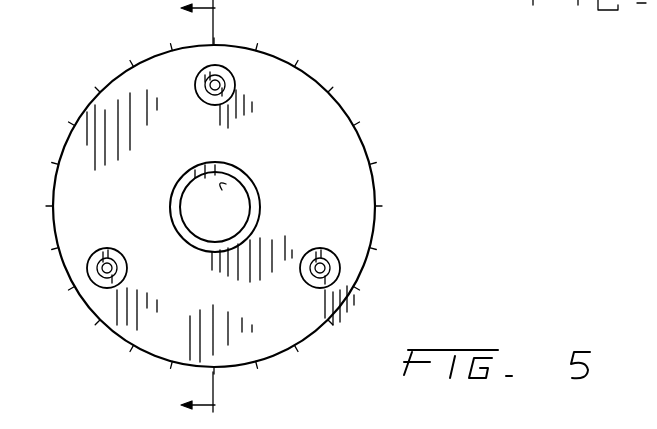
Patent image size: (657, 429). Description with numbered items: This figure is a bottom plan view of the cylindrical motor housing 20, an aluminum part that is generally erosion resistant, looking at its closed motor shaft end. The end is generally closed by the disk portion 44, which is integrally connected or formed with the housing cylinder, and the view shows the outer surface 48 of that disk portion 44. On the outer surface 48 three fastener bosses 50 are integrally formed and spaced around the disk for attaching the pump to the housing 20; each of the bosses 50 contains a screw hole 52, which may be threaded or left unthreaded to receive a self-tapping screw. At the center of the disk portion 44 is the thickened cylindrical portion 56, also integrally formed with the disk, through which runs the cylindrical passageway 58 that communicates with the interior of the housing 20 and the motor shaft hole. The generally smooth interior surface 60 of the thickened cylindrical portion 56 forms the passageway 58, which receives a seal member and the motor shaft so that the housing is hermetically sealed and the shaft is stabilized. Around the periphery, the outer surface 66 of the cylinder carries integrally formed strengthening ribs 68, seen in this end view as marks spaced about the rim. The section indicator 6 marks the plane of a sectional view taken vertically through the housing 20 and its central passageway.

The housing 20 is at (377, 228).
The disk portion 44 is at (322, 157).
The outer surface 48 is at (133, 202).
The fastener bosses 50 is at (218, 72).
The screw hole 52 is at (232, 83).
The thickened cylindrical portion 56 is at (258, 198).
The cylindrical passageway 58 is at (221, 223).
The interior surface 60 is at (226, 184).
The outer surface 66 is at (90, 104).
The strengthening ribs 68 is at (137, 63).
The section line 6- 6 is at (190, 208).